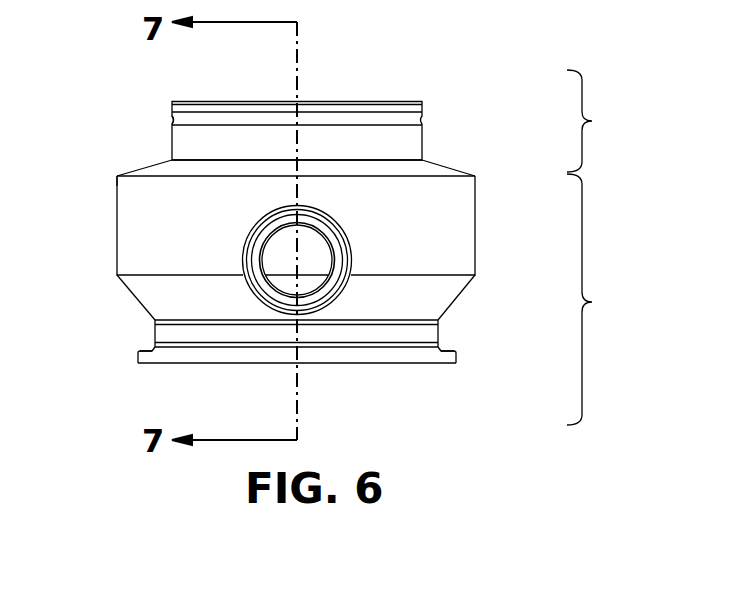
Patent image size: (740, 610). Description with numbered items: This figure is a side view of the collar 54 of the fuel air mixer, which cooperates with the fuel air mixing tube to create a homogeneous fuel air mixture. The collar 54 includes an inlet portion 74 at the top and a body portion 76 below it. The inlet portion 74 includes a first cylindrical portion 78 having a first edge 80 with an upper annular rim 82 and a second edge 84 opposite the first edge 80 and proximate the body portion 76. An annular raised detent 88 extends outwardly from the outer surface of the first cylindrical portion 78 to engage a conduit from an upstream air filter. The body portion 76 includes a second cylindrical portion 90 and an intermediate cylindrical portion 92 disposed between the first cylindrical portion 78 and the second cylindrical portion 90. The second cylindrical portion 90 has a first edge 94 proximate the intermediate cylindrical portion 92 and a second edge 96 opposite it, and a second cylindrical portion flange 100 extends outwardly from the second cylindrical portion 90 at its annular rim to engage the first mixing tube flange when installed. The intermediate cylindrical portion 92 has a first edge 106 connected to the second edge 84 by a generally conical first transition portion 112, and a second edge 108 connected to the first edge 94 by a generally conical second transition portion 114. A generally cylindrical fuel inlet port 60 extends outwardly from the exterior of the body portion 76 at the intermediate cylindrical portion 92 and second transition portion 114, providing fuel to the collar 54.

The collar 54 is at (127, 62).
The fuel inlet port 60 is at (350, 242).
The inlet portion 74 is at (597, 121).
The body portion 76 is at (597, 299).
The first cylindrical portion 78 is at (412, 140).
The first edge 80 is at (422, 102).
The upper annular rim 82 is at (362, 101).
The second edge 84 is at (172, 160).
The annular raised detent 88 is at (172, 124).
The second cylindrical portion 90 is at (425, 335).
The intermediate cylindrical portion 92 is at (135, 232).
The first edge 94 is at (155, 323).
The second edge 96 is at (425, 365).
The second cylindrical portion flange 100 is at (447, 355).
The first edge 106 is at (117, 176).
The second edge 108 is at (117, 276).
The first transition portion 112 is at (428, 170).
The second transition portion 114 is at (150, 290).